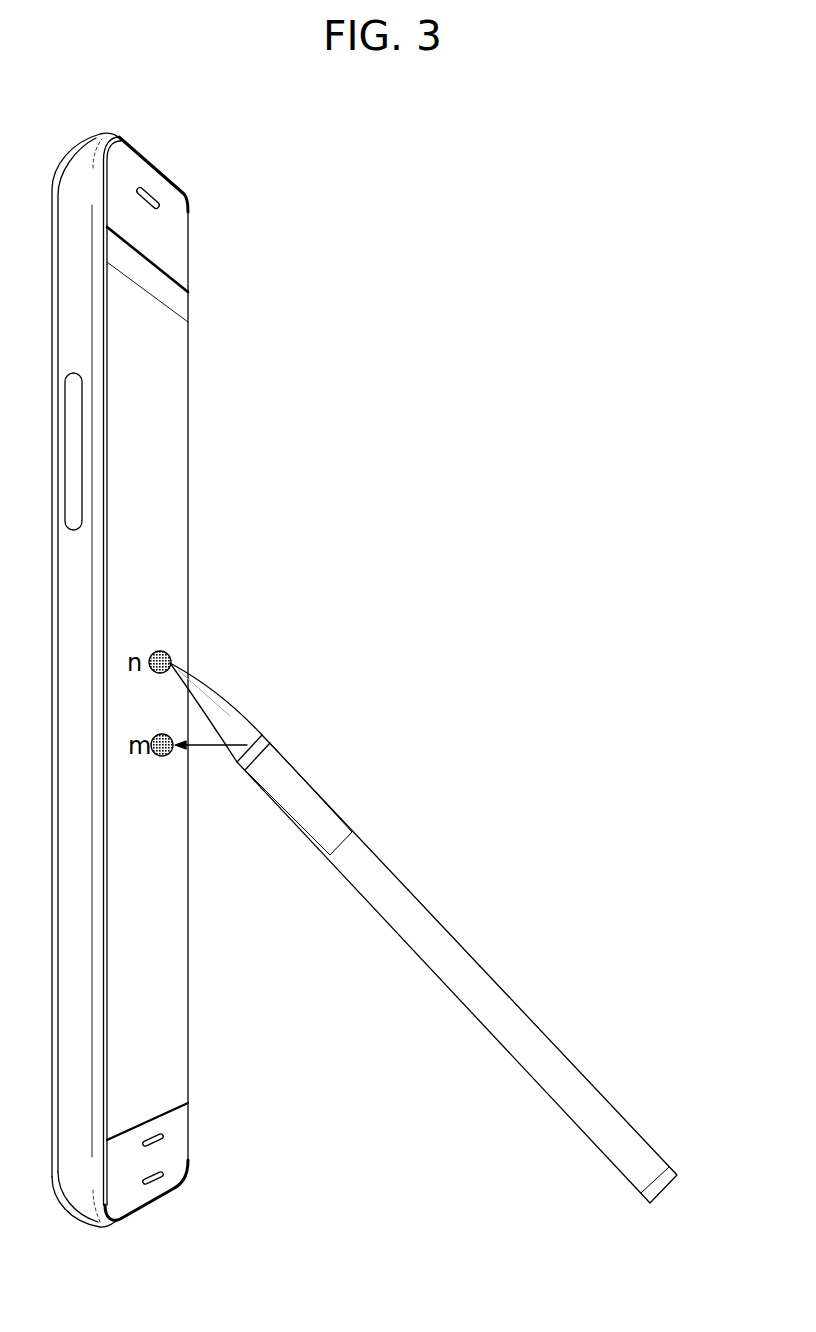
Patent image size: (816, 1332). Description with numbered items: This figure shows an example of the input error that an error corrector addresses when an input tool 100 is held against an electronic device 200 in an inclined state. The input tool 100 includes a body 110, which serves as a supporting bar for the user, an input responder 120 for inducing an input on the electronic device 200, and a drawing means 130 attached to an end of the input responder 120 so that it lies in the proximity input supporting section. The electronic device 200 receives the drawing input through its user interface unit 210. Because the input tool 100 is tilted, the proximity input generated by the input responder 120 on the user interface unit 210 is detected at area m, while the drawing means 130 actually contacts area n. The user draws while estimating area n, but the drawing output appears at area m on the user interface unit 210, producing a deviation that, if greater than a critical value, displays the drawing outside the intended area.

The input tool 100 is at (431, 920).
The body 110 is at (503, 984).
The input responder 120 is at (313, 802).
The drawing means 130 is at (278, 717).
The electronic device 200 is at (152, 662).
The user interface unit 210 is at (177, 358).